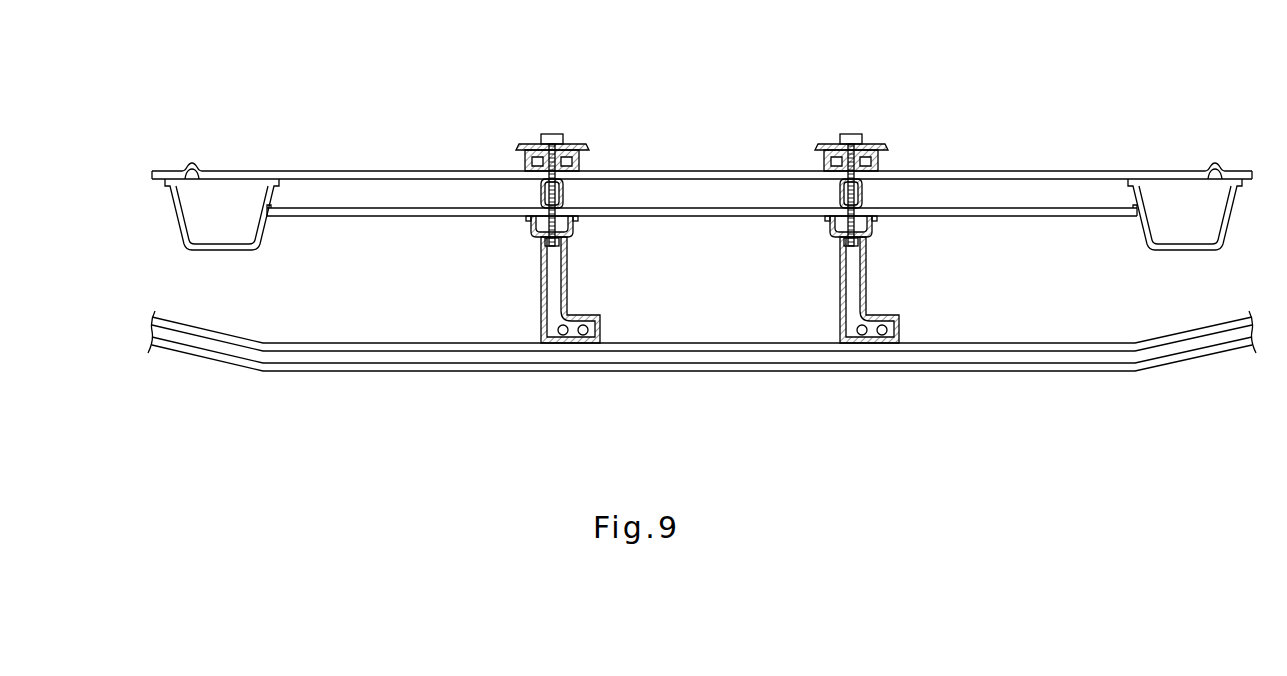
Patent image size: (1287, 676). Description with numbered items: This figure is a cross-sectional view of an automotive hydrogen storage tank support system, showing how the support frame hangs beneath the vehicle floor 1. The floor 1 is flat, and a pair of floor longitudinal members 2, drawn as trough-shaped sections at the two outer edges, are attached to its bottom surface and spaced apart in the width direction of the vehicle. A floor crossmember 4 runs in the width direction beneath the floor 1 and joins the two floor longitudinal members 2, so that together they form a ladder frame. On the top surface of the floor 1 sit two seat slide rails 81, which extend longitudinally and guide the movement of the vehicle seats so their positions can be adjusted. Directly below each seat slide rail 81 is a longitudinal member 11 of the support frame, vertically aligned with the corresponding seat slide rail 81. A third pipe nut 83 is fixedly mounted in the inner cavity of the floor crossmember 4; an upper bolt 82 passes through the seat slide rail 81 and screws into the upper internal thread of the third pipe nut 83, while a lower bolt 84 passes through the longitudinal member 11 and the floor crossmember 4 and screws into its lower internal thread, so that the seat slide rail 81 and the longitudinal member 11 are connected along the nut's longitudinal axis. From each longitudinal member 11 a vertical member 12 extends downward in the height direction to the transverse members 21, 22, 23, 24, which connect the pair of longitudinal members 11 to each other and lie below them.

The floor 1 is at (378, 170).
The floor crossmember 4 is at (378, 217).
The floor longitudinal member 2 is at (219, 250).
The longitudinal member 11 is at (530, 220).
The vertical member 12 is at (540, 290).
The seat slide rail 81 is at (578, 144).
The upper bolt 82 is at (549, 134).
The third pipe nut 83 is at (585, 178).
The lower bolt 84 is at (545, 242).
The first front transverse member 21 is at (702, 376).
The second front transverse member 22 is at (702, 376).
The first rear transverse member 23 is at (702, 376).
The second rear transverse member 24 is at (700, 372).